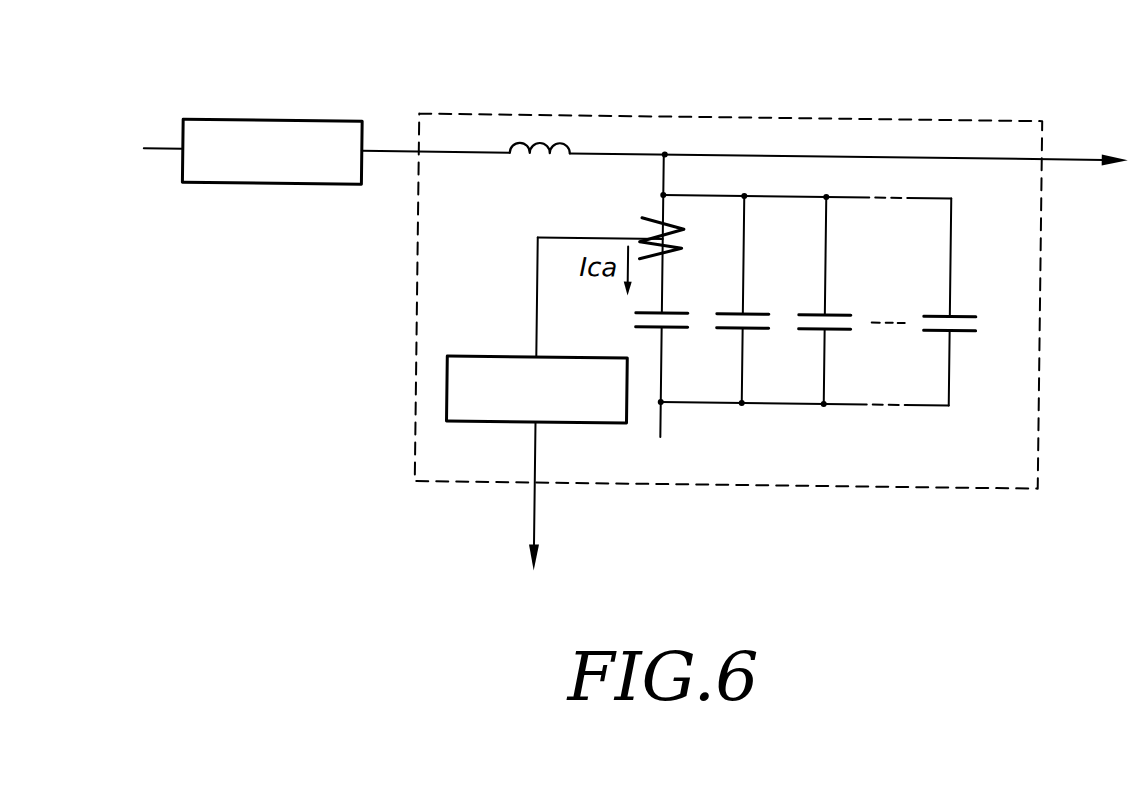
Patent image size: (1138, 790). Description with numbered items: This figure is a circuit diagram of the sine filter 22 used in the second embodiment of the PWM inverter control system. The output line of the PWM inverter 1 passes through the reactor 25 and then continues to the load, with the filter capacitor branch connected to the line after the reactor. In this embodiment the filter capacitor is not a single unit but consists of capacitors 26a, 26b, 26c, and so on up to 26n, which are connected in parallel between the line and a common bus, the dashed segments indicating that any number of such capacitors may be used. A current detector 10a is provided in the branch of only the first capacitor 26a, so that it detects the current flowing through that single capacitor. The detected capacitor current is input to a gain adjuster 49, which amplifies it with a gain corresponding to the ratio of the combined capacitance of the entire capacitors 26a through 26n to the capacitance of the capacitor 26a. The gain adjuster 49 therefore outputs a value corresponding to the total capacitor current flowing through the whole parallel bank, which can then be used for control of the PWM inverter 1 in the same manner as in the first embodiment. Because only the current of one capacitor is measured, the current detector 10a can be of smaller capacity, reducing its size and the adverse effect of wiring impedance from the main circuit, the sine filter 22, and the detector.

The PWM inverter 1 is at (265, 125).
The reactor 25 is at (540, 145).
The sine filter 22 is at (657, 117).
The current detector 10a is at (686, 244).
The gain adjuster 49 is at (490, 358).
The capacitor 26a is at (655, 331).
The capacitor 26b is at (735, 331).
The capacitor 26c is at (812, 331).
The capacitor 26n is at (936, 331).